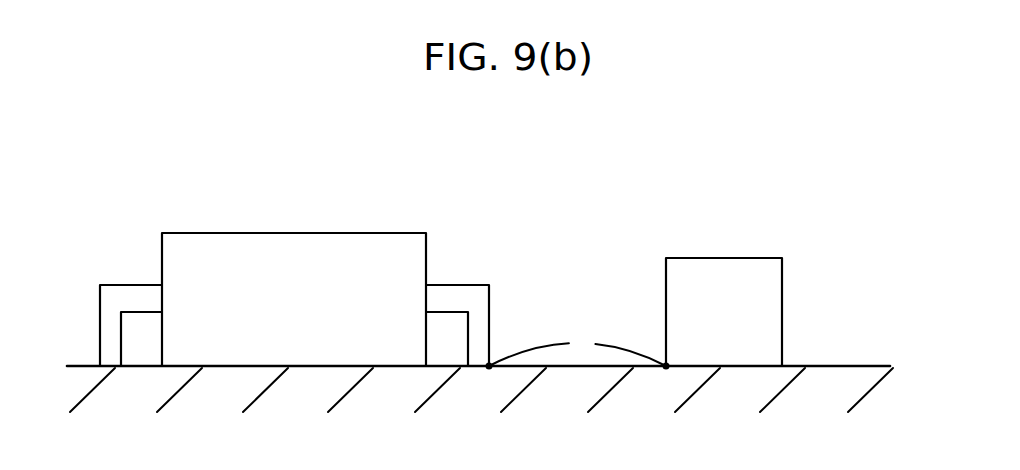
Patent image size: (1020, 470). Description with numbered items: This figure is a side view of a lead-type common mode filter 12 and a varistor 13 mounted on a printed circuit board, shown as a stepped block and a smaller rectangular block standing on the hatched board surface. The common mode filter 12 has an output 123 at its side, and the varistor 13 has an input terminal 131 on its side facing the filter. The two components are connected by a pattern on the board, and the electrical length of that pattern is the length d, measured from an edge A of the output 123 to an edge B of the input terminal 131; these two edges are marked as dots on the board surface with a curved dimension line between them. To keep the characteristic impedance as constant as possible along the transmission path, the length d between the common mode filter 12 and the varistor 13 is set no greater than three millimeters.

The common mode filter 12 is at (311, 247).
The output of the common mode filter 123 is at (480, 322).
The varistor 13 is at (765, 263).
The input terminal of the varistor 131 is at (770, 311).
The edge of the output A is at (490, 364).
The edge of the input terminal B is at (665, 364).
The length d is at (577, 348).